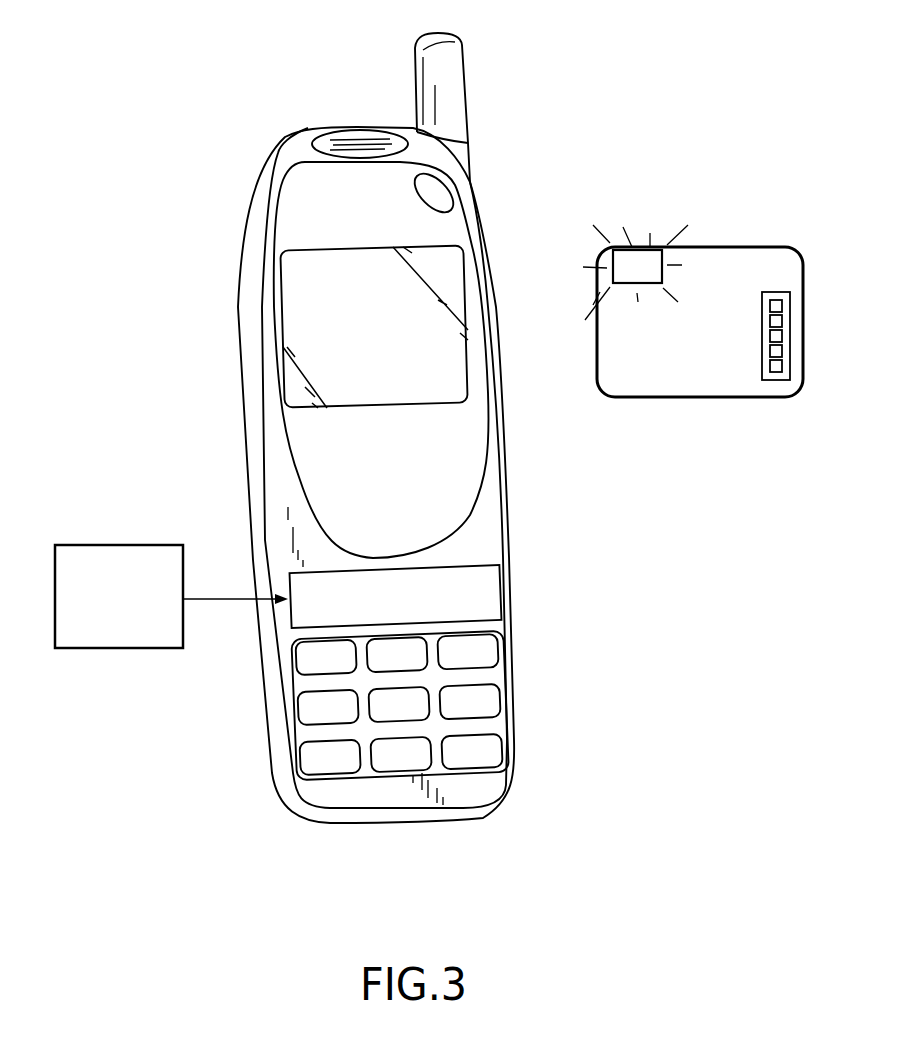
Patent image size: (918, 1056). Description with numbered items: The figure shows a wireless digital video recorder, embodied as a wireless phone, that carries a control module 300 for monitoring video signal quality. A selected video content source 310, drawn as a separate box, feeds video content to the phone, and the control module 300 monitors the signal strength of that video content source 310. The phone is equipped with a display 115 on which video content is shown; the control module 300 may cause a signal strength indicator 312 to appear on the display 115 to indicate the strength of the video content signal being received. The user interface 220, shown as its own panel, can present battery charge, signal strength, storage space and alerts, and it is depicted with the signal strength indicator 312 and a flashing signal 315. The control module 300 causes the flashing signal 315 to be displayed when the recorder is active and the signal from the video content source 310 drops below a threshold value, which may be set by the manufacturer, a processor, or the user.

The display 115 is at (280, 305).
The control module 300 is at (500, 588).
The video content source 310 is at (112, 648).
The user interface 220 is at (688, 397).
The flashing signal 315 is at (642, 250).
The signal strength indicator 312 is at (790, 330).